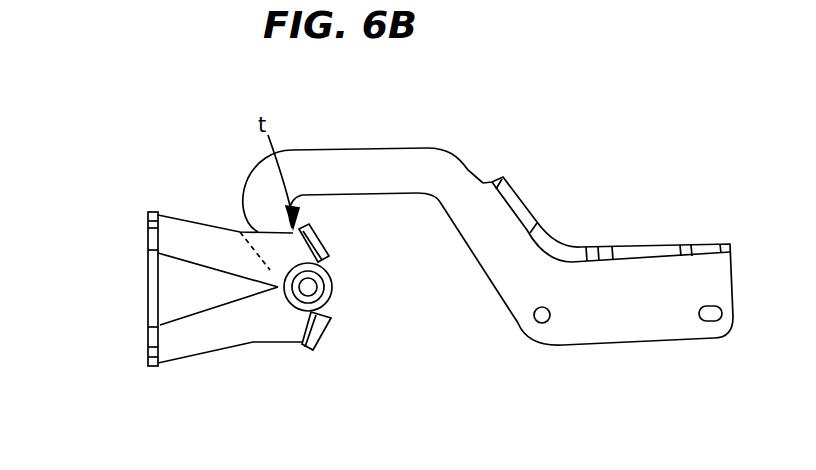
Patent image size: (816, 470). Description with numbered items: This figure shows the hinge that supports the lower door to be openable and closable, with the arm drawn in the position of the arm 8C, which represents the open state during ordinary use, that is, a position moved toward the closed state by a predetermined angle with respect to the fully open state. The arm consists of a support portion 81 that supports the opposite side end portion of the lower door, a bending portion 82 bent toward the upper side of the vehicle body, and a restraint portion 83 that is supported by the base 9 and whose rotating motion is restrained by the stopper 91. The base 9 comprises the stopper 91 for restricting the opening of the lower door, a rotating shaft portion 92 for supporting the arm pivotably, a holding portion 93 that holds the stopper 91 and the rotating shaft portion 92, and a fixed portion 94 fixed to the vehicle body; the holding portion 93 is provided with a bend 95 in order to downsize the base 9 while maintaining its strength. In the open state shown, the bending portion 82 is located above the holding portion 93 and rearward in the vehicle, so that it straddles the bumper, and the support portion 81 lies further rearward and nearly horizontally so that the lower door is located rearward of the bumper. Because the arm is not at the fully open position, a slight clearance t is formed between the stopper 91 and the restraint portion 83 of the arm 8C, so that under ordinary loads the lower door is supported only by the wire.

The support portion 81 is at (652, 323).
The bending portion 82 is at (358, 158).
The arm 8C is at (457, 153).
The restraint portion 83 is at (258, 213).
The base 9 is at (228, 287).
The stopper 91 is at (315, 242).
The rotating shaft portion 92 is at (308, 287).
The holding portion 93 is at (260, 317).
The fixed portion 94 is at (148, 288).
The bend 95 is at (190, 307).